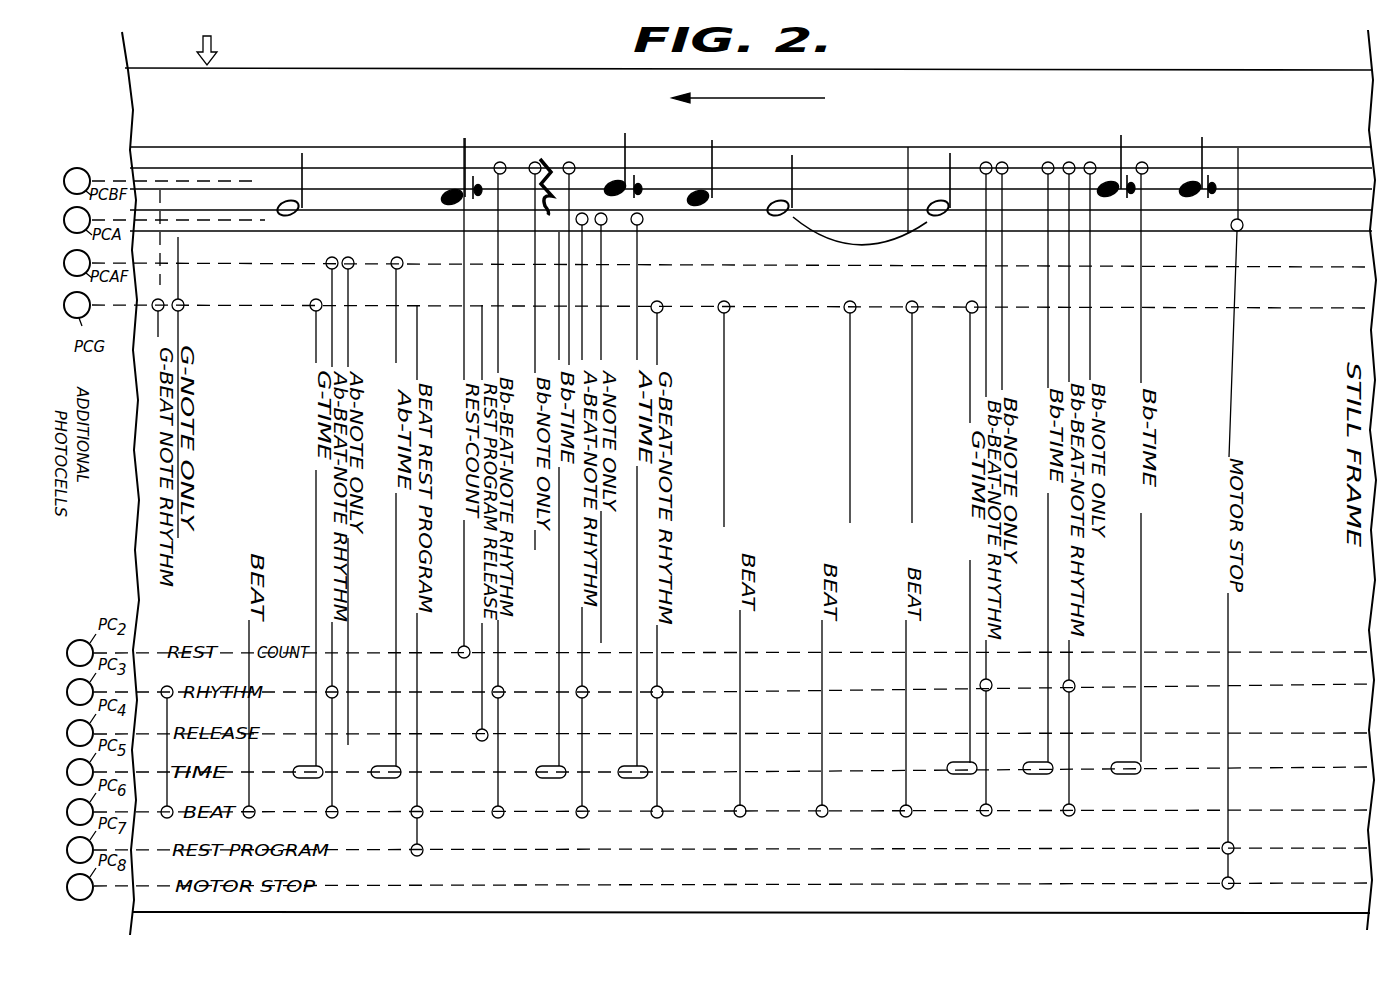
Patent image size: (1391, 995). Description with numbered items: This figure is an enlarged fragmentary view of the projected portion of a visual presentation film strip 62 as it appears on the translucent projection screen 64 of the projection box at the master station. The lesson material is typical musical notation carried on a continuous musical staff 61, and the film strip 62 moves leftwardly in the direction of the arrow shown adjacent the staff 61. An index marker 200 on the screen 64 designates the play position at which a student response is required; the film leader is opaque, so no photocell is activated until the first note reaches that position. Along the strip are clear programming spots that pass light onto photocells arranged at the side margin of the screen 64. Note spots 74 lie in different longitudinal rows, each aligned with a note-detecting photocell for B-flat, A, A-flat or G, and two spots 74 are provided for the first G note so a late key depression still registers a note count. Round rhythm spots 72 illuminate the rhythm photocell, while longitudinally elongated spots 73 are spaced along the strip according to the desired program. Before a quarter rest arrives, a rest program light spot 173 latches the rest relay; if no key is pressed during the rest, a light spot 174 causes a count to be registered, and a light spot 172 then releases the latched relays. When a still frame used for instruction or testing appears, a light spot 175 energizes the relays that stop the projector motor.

The index marker 200 is at (200, 45).
The translucent projection screen 64 is at (409, 63).
The film strip 62 is at (1045, 70).
The musical staff 61 is at (871, 153).
The note clear spots 74 is at (160, 311).
The rhythm clear spots 72 is at (165, 686).
The elongated time spots 73 is at (386, 766).
The release light spot 172 is at (488, 735).
The rest program light spot 173 is at (423, 848).
The rest count light spot 174 is at (458, 650).
The motor stop light spot 175 is at (1232, 878).